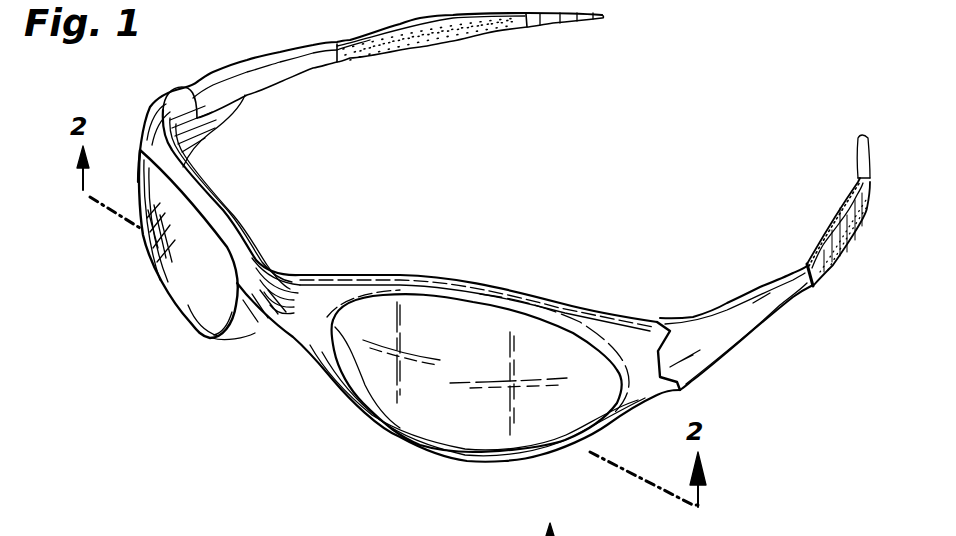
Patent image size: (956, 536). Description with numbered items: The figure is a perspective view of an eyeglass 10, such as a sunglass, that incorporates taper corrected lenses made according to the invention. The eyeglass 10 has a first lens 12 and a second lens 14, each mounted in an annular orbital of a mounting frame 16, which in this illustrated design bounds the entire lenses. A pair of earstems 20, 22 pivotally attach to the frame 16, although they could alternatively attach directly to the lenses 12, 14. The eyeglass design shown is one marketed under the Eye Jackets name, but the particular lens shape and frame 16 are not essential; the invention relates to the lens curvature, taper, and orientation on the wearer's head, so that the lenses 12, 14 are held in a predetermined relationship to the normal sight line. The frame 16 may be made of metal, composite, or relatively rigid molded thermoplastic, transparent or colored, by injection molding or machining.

The eyeglass 10 is at (413, 278).
The first lens 12 is at (427, 417).
The second lens 14 is at (178, 256).
The mounting frame 16 is at (291, 292).
The earstem 20 is at (770, 310).
The earstem 22 is at (317, 70).